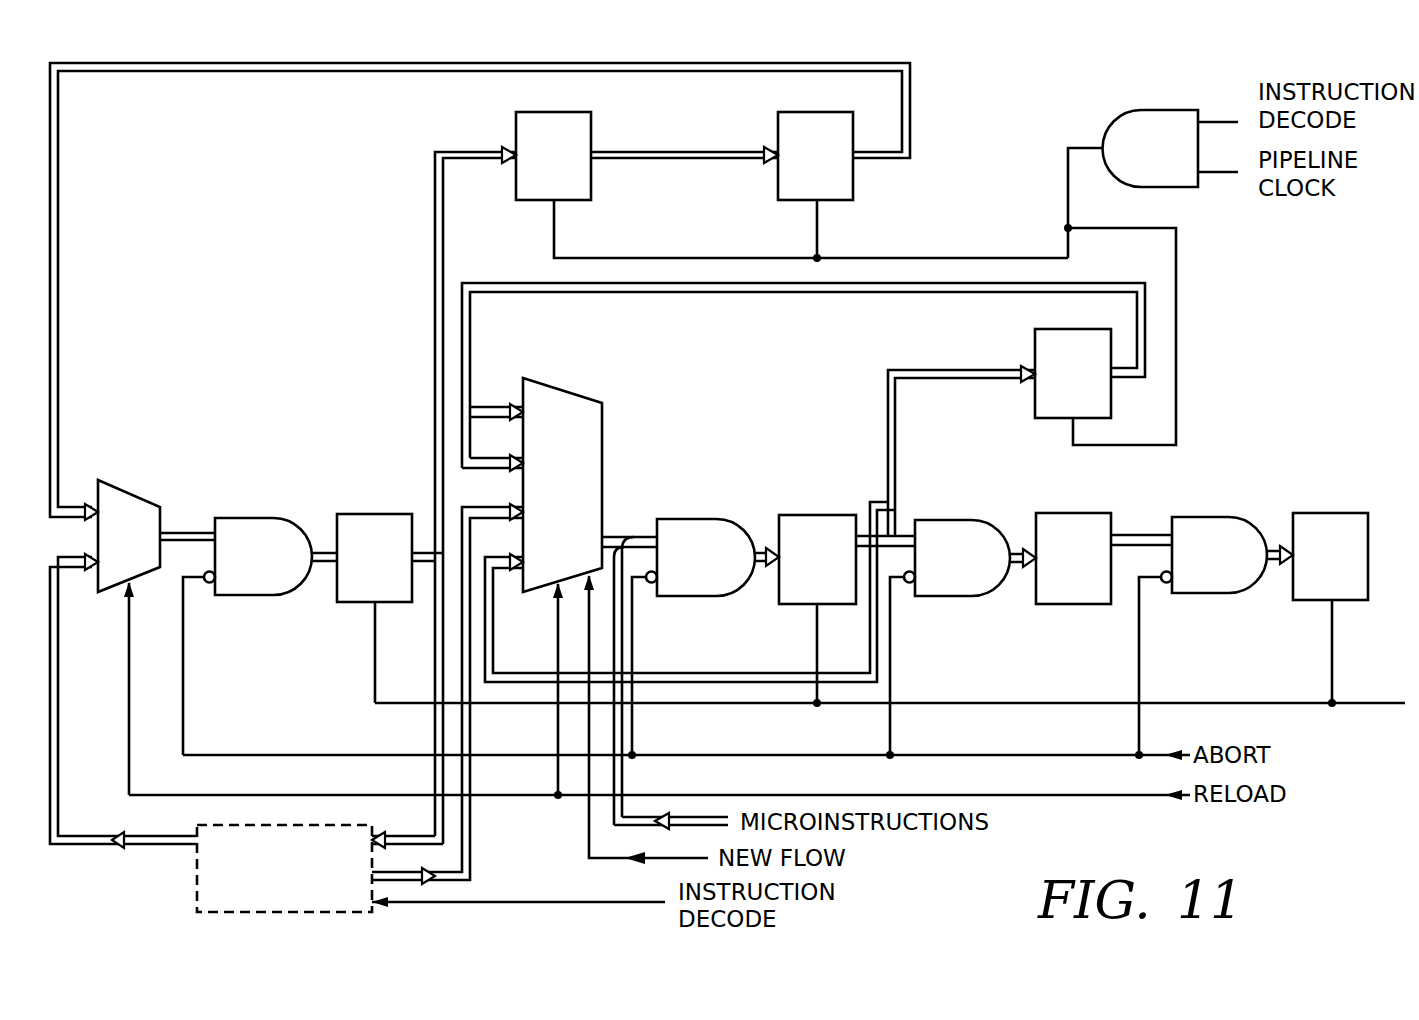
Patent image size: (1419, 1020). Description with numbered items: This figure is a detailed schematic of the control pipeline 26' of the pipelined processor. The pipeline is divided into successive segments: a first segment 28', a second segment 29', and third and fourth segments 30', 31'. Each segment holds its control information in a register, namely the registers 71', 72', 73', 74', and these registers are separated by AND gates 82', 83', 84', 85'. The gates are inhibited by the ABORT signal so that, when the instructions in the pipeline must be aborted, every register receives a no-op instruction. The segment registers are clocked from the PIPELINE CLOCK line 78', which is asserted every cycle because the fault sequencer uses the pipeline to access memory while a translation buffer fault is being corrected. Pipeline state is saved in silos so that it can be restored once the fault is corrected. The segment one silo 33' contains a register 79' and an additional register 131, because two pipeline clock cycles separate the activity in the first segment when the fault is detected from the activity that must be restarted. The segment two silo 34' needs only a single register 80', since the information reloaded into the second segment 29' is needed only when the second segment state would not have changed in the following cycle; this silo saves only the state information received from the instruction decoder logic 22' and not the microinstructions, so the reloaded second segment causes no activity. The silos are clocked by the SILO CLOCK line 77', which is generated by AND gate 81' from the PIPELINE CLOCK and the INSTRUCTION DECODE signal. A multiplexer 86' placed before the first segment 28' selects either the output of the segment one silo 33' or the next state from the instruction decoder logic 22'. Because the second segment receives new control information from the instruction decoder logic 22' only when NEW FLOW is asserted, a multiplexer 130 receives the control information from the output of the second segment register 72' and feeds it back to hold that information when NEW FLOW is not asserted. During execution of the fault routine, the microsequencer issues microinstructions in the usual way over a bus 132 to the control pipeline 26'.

The instruction decoder logic 22' is at (238, 868).
The control pipeline 26' is at (1321, 477).
The first segment 28' is at (258, 479).
The second segment 29' is at (725, 441).
The segment 3 30' is at (1034, 519).
The segment 4 31' is at (1295, 491).
The segment one silo 33' is at (1026, 106).
The segment two silo 34' is at (1270, 342).
The register 71' is at (377, 608).
The second segment register 72' is at (823, 611).
The register 73' is at (1104, 581).
The register 74' is at (1310, 610).
The silo clock line 77' is at (811, 231).
The pipeline clock line 78' is at (893, 690).
The register 79' is at (514, 144).
The register 80' is at (1034, 367).
The AND gate 81' is at (1171, 120).
The AND gate 82' is at (260, 636).
The AND gate 83' is at (703, 639).
The AND gate 84' is at (948, 639).
The AND gate 85' is at (1201, 638).
The multiplexer 86' is at (156, 630).
The multiplexer 130 is at (603, 432).
The additional register 131 is at (778, 114).
The bus 132 is at (624, 784).